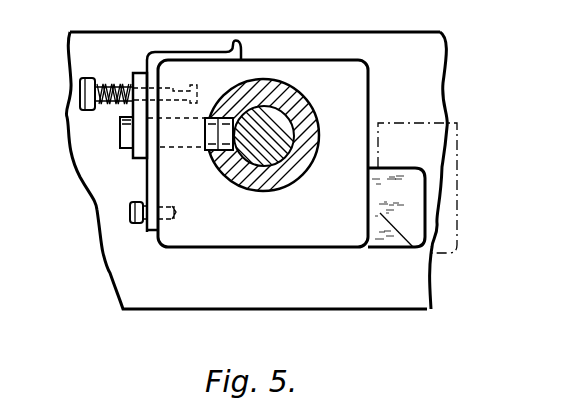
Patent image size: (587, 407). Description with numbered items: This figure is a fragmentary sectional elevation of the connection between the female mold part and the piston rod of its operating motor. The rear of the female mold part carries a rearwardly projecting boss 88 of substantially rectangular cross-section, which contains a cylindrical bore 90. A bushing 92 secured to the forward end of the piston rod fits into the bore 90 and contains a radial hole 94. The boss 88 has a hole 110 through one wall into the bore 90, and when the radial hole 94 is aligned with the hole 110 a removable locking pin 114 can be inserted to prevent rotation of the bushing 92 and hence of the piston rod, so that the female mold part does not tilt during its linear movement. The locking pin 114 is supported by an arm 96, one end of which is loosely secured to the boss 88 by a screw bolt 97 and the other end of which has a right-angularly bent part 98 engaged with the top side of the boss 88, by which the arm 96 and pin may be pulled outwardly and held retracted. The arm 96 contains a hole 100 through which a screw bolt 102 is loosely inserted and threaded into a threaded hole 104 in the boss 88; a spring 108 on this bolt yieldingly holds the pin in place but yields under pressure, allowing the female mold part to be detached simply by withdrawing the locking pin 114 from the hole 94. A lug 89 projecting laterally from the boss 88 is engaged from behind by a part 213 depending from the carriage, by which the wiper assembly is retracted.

The boss 88 is at (292, 242).
The lug 89 is at (392, 230).
The cylindrical bore 90 is at (268, 160).
The bushing 92 is at (293, 98).
The radial hole 94 is at (220, 152).
The arm 96 is at (153, 192).
The screw bolt 97 is at (130, 212).
The right-angularly bent part 98 is at (192, 53).
The hole 100 is at (155, 118).
The screw bolt 102 is at (80, 98).
The threaded hole 104 is at (178, 89).
The spring 108 is at (110, 85).
The hole 110 is at (147, 172).
The locking pin 114 is at (120, 135).
The part depending from the carriage 213 is at (462, 142).